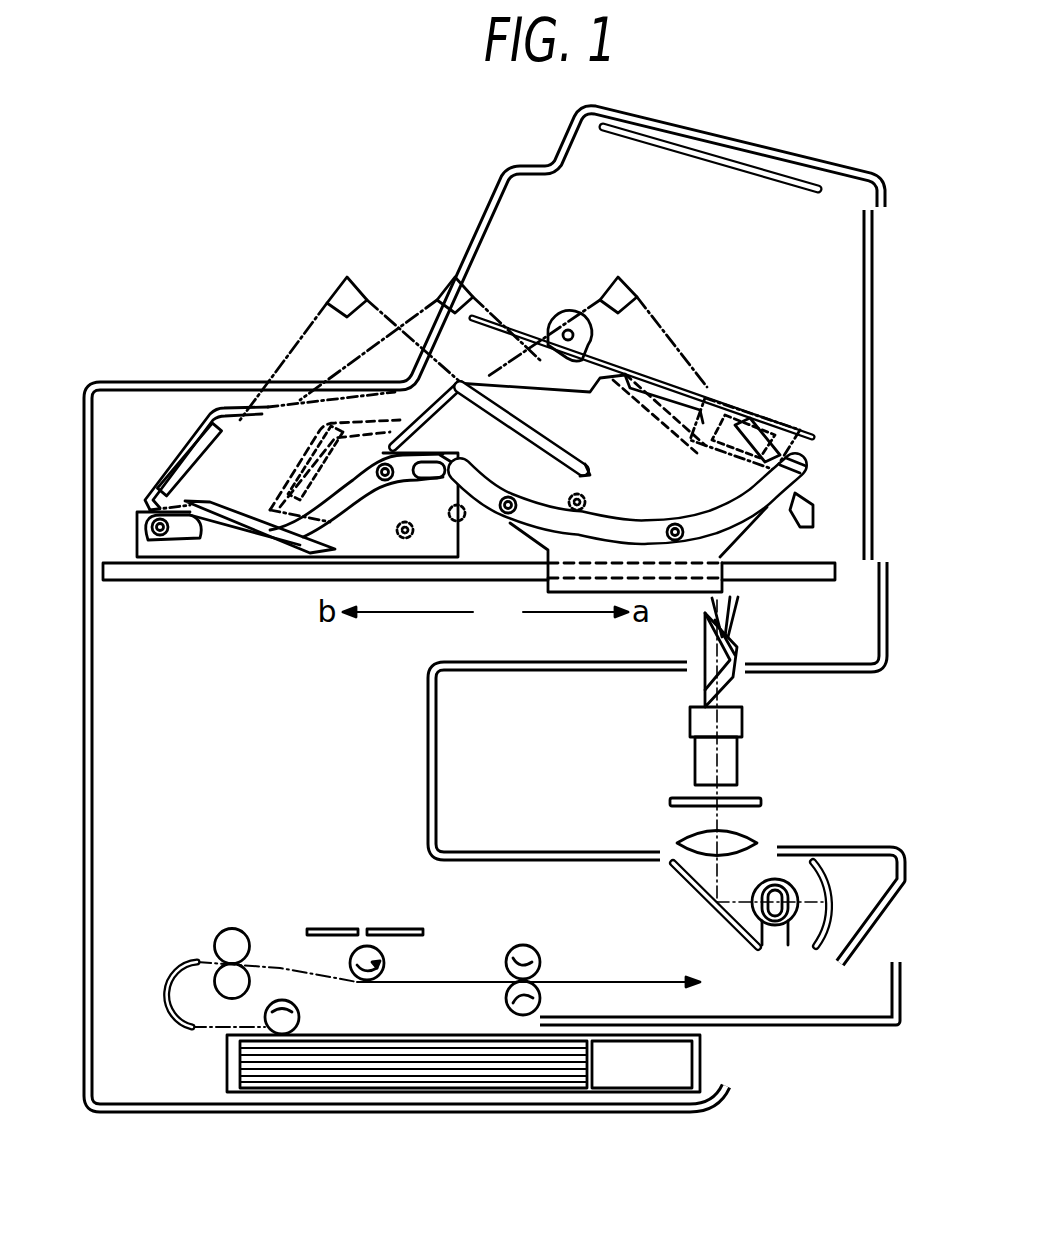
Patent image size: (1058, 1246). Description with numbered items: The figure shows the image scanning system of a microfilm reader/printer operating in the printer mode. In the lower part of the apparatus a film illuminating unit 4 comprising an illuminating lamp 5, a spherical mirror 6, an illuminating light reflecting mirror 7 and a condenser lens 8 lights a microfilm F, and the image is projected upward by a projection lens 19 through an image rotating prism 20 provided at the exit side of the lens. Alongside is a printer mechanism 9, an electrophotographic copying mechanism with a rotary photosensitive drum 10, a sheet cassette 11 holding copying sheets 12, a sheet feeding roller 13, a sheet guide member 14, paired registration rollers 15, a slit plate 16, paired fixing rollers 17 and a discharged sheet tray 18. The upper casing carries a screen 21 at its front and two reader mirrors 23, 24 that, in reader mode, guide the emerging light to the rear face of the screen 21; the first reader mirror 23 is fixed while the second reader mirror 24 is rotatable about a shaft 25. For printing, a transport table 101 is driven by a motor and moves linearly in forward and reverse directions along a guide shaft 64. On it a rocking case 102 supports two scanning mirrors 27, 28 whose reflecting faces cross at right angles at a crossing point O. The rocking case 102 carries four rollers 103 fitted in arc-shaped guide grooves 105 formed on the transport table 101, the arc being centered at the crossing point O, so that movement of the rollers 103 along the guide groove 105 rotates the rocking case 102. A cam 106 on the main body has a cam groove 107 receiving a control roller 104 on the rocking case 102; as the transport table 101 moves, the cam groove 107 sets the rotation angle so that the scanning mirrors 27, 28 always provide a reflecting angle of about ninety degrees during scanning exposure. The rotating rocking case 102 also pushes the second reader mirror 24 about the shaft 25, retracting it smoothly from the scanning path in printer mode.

The film illuminating unit 4 is at (840, 885).
The illuminating lamp 5 is at (782, 930).
The spherical mirror 6 is at (818, 948).
The illuminating light reflecting mirror 7 is at (745, 948).
The condenser lens 8 is at (745, 843).
The printer mechanism 9 is at (290, 934).
The photosensitive drum 10 is at (385, 960).
The sheet cassette 11 is at (415, 1093).
The copying sheets 12 is at (330, 1068).
The sheet feeding roller 13 is at (305, 1010).
The sheet guide member 14 is at (167, 975).
The registration rollers 15 is at (233, 932).
The slit plate 16 is at (345, 927).
The fixing rollers 17 is at (527, 955).
The discharged sheet tray 18 is at (780, 1025).
The projection lens 19 is at (727, 757).
The image rotating prism 20 is at (730, 678).
The screen 21 is at (873, 375).
The first reader mirror 23 is at (768, 182).
The second reader mirror 24 is at (665, 380).
The shaft 25 is at (568, 330).
The scanning mirror 27 is at (472, 385).
The scanning mirror 28 is at (200, 467).
The guide shaft 64 is at (810, 580).
The transport table 101 is at (585, 552).
The rocking case 102 is at (240, 420).
The rollers 103 is at (512, 495).
The control roller 104 is at (390, 480).
The guide groove 105 is at (745, 508).
The cam 106 is at (372, 518).
The cam groove 107 is at (237, 528).
The microfilm F is at (745, 797).
The crossing point O is at (347, 277).